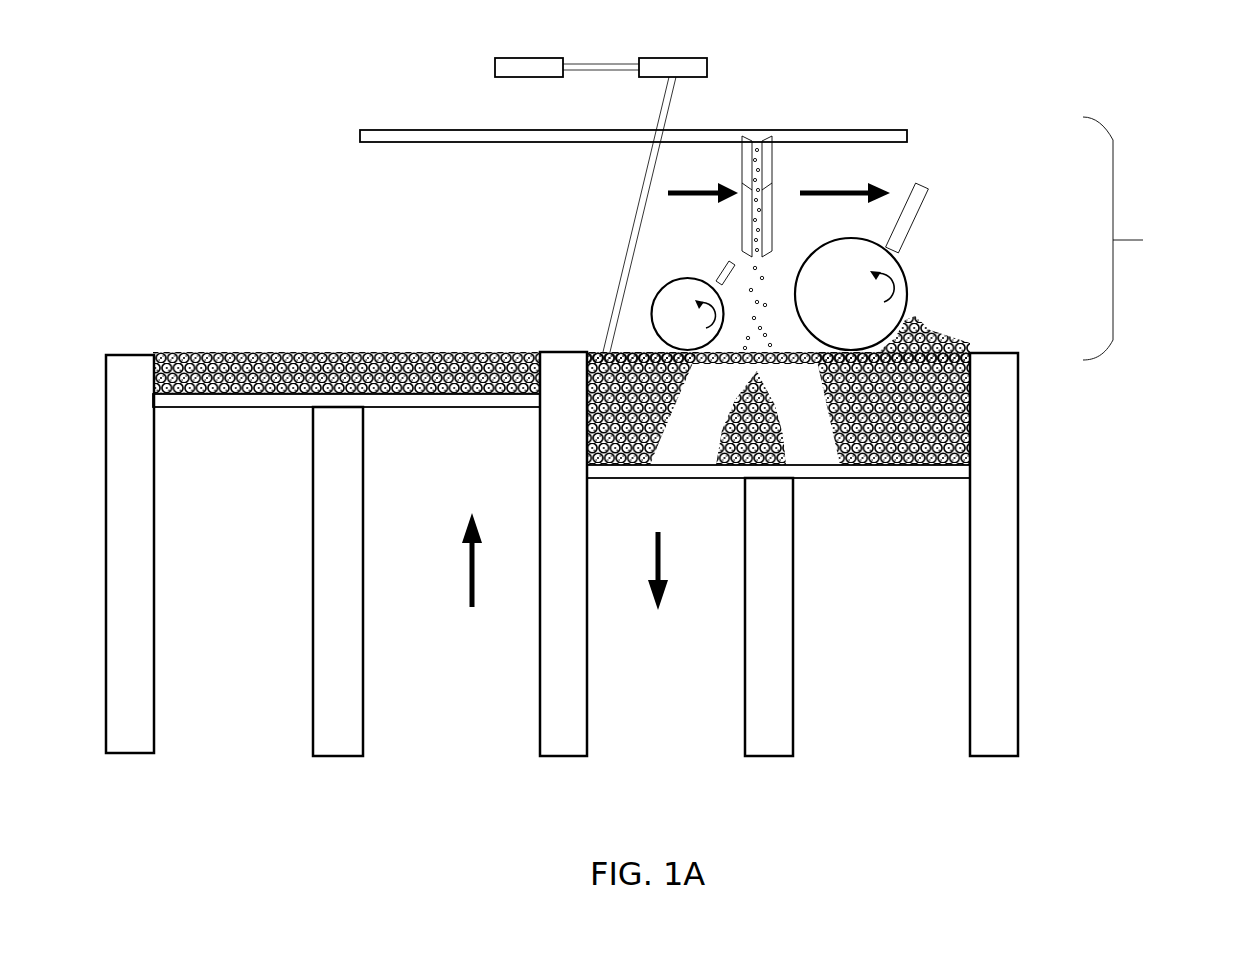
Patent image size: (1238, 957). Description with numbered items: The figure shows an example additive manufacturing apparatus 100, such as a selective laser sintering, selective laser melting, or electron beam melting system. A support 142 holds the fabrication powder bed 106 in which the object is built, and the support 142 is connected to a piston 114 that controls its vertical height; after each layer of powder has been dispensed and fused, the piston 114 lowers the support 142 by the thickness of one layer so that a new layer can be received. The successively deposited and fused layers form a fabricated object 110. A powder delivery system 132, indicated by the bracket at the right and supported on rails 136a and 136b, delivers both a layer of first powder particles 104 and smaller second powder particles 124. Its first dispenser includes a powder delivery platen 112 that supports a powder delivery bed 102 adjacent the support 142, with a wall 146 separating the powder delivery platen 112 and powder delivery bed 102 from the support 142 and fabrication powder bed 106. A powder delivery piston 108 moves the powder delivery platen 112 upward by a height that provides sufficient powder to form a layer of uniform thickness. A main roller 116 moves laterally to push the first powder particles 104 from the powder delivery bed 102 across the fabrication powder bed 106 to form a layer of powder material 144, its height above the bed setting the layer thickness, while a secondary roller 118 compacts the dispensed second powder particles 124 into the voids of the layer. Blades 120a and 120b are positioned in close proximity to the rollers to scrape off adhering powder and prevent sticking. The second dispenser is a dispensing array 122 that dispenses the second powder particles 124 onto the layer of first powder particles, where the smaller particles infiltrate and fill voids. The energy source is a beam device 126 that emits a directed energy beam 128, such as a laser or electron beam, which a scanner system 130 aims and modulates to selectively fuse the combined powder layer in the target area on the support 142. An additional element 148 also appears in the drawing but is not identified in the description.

The additive manufacturing apparatus 100 is at (230, 111).
The powder delivery bed 102 is at (250, 358).
The first powder particles 104 is at (945, 333).
The fabrication powder bed 106 is at (950, 423).
The powder delivery piston 108 is at (313, 476).
The fabricated object 110 is at (690, 440).
The powder delivery platen 112 is at (256, 399).
The piston 114 is at (790, 566).
The main roller 116 is at (903, 265).
The secondary roller 118 is at (651, 313).
The blade 120a is at (718, 265).
The blade 120b is at (926, 210).
The dispensing array 122 is at (772, 190).
The second powder particles 124 is at (763, 265).
The beam device 126 is at (494, 68).
The energy beam 128 is at (598, 70).
The scanner system 130 is at (645, 78).
The powder delivery system 132 is at (1144, 238).
The rail 136a is at (632, 144).
The rail 136b is at (639, 214).
The support 142 is at (878, 470).
The layer of powder material 144 is at (1012, 354).
The wall 146 is at (565, 614).
The left wall 148 is at (130, 554).